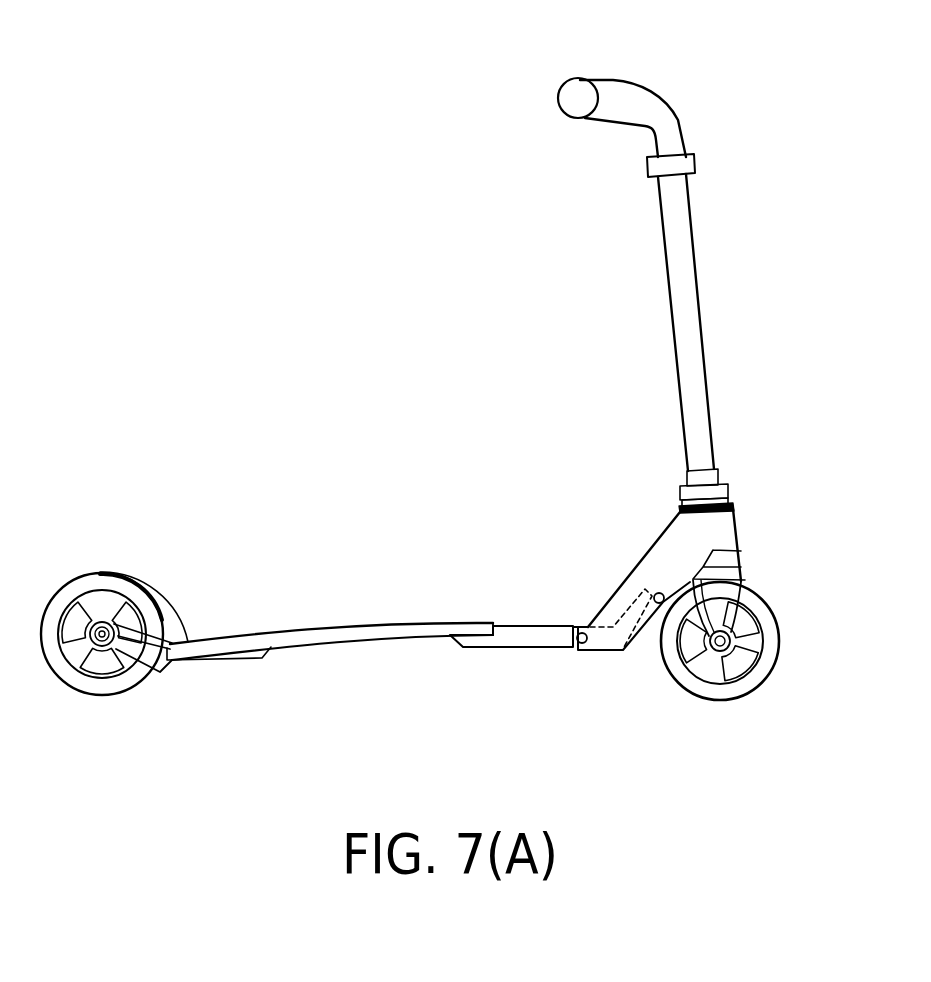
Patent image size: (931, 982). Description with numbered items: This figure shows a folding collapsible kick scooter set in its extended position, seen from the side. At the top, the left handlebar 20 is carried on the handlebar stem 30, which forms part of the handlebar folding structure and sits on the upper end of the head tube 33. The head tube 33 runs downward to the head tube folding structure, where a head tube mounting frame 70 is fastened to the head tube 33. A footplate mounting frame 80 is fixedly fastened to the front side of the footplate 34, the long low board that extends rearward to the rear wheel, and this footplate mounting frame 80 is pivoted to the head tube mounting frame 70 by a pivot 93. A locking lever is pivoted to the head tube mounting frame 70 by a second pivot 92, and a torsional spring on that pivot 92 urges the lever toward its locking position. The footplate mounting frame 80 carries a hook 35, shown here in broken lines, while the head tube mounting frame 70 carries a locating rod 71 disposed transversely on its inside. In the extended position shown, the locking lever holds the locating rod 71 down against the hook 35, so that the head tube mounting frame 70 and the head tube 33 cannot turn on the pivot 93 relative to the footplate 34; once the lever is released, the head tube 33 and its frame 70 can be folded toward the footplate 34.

The left handlebar 20 is at (578, 98).
The handlebar stem 30 is at (660, 135).
The head tube 33 is at (685, 303).
The footplate 34 is at (341, 631).
The hook 35 is at (637, 602).
The head tube mounting frame 70 is at (668, 545).
The locating rod 71 is at (689, 660).
The footplate mounting frame 80 is at (553, 637).
The pivot 92 is at (665, 597).
The pivot 93 is at (588, 644).